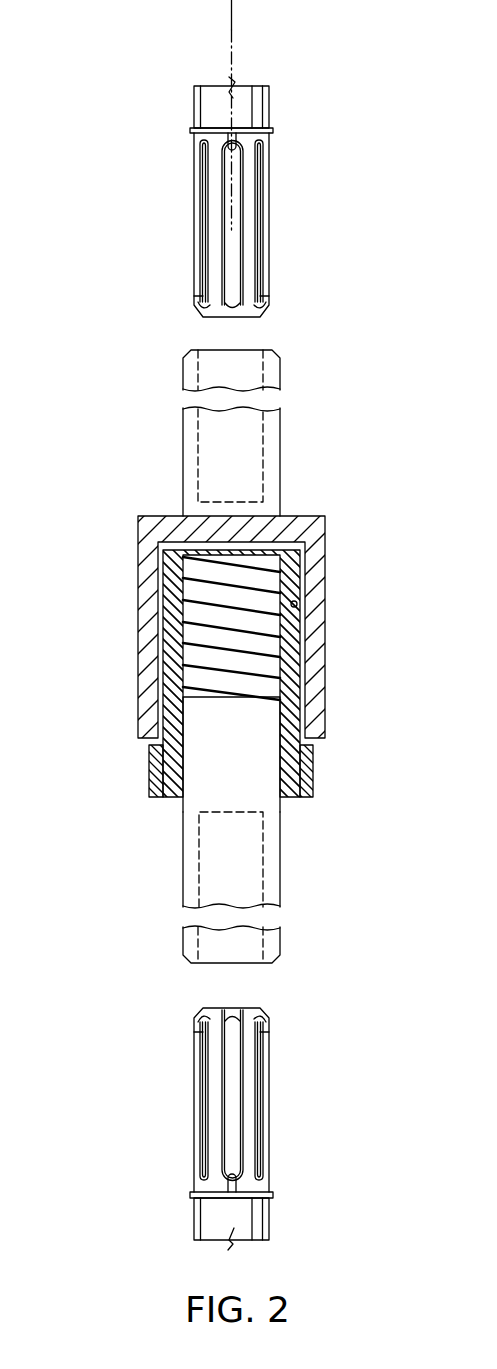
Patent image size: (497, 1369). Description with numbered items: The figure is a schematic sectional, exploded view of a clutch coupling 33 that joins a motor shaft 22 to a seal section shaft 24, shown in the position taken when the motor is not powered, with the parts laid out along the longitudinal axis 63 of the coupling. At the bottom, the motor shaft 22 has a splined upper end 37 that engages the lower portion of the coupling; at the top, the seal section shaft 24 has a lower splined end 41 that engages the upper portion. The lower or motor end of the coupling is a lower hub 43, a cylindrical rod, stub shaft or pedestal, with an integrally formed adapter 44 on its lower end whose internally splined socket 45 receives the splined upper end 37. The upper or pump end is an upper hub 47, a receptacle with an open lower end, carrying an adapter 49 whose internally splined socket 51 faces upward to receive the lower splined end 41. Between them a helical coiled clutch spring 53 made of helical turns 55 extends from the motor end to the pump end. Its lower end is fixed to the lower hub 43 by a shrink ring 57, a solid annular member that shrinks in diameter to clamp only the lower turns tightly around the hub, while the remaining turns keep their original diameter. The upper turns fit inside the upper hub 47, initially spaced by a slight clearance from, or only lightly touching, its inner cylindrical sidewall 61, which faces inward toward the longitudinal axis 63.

The motor shaft 22 is at (208, 1220).
The seal section shaft 24 is at (207, 105).
The clutch coupling 33 is at (248, 652).
The splined upper end 37 is at (194, 1106).
The lower splined end 41 is at (194, 215).
The lower hub 43 is at (243, 767).
The adapter 44 is at (280, 812).
The internally splined socket 45 is at (203, 876).
The upper hub 47 is at (122, 524).
The adapter 49 is at (183, 445).
The internally splined socket 51 is at (252, 447).
The clutch spring 53 is at (172, 694).
The helical turns 55 is at (292, 700).
The shrink ring 57 is at (149, 773).
The inner cylindrical sidewall 61 is at (293, 601).
The longitudinal axis 63 is at (229, 38).